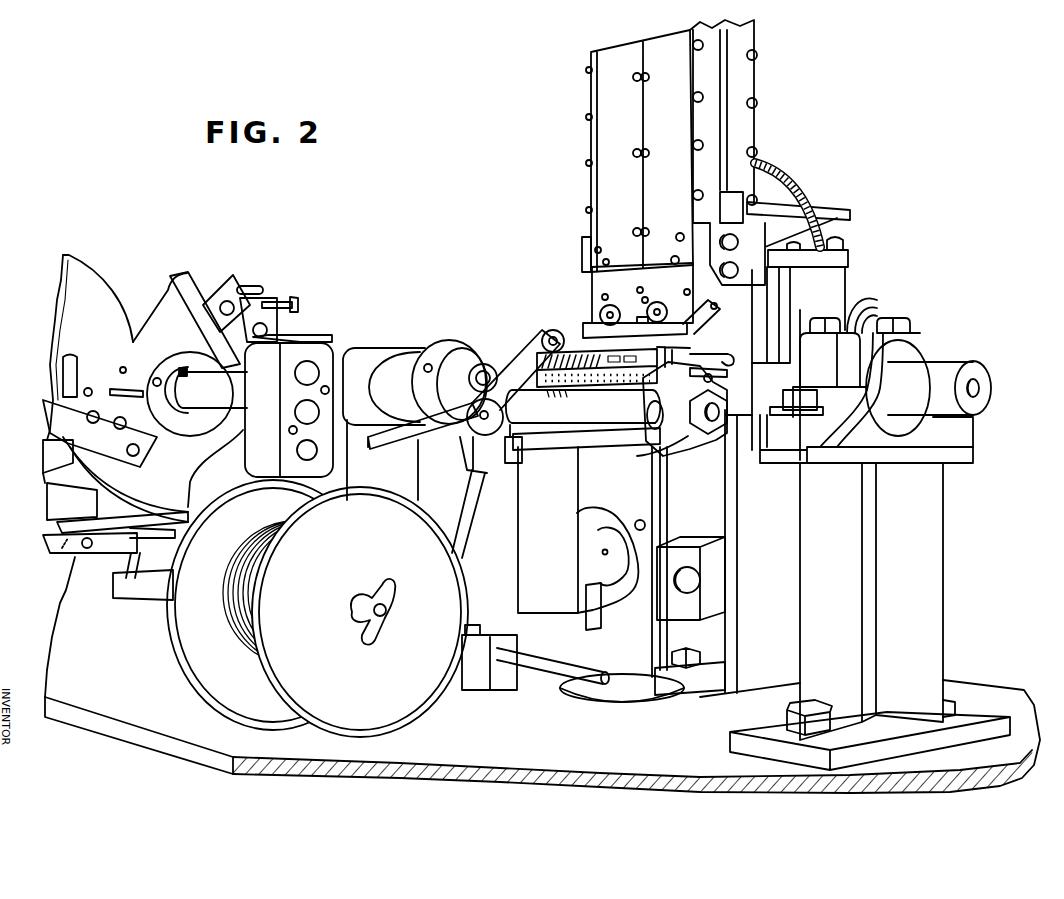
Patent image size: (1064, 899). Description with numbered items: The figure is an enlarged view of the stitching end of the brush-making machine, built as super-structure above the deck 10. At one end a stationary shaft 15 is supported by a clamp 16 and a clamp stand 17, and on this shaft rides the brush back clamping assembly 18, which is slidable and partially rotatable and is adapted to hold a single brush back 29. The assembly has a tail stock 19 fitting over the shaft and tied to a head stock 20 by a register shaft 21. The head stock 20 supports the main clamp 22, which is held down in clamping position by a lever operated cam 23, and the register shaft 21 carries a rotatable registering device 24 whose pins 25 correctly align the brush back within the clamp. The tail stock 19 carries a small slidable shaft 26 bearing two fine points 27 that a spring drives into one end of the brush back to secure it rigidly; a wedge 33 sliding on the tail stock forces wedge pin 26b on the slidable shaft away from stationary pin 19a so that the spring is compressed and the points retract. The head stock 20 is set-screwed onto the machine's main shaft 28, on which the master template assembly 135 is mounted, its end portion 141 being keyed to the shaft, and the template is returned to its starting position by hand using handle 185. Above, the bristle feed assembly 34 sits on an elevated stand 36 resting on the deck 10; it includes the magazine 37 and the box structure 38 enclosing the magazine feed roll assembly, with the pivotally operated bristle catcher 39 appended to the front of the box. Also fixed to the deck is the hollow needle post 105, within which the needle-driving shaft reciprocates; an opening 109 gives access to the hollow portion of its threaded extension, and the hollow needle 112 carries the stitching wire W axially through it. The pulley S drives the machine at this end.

The deck 10 is at (975, 690).
The stationary shaft 15 is at (946, 370).
The clamp 16 is at (912, 349).
The clamp stand 17 is at (937, 559).
The brush back clamping assembly 18 is at (558, 421).
The tail stock 19 is at (686, 446).
The stationary pin 19a is at (680, 347).
The head stock 20 is at (449, 350).
The register shaft 21 is at (724, 408).
The main clamp 22 is at (553, 350).
The lever operated cam 23 is at (413, 432).
The registering device 24 is at (652, 455).
The pins 25 is at (512, 448).
The small slidable shaft 26 is at (722, 380).
The wedge pin 26b is at (706, 353).
The fine points 27 is at (673, 351).
The main shaft 28 is at (414, 334).
The brush back 29 is at (490, 360).
The wedge 33 is at (665, 446).
The bristle feed assembly 34 is at (768, 129).
The elevated stand 36 is at (740, 629).
The magazine 37 is at (606, 184).
The box structure 38 is at (593, 293).
The bristle catcher 39 is at (716, 310).
The hollow needle post 105 is at (592, 503).
The opening 109 is at (592, 543).
The hollow needle 112 is at (602, 569).
The master template assembly 135 is at (99, 263).
The end portion of master template assembly 141 is at (103, 300).
The handle 185 is at (58, 410).
The pulley S is at (405, 703).
The wire W is at (570, 638).